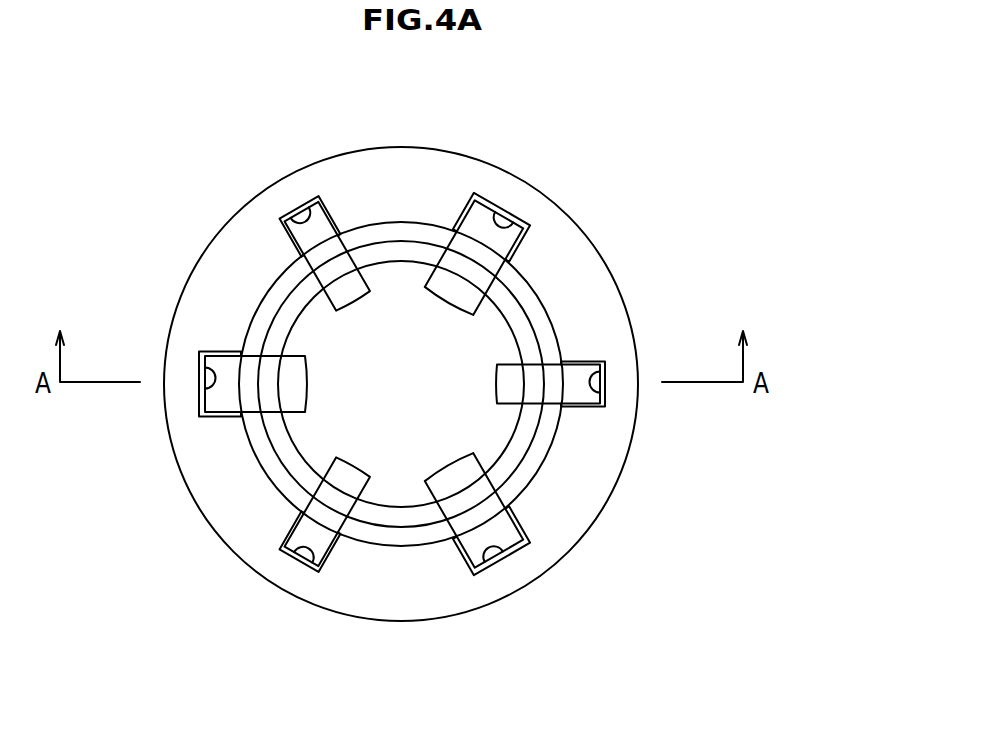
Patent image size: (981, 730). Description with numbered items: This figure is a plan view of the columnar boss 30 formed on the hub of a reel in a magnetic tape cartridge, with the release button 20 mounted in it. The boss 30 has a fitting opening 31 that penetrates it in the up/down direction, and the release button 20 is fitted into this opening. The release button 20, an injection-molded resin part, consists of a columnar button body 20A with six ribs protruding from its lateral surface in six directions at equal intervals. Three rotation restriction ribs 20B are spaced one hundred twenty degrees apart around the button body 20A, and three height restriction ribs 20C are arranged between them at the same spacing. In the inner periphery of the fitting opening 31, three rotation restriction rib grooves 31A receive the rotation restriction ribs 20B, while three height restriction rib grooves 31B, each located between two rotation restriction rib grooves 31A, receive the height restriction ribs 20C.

The release button 20 is at (475, 387).
The button body 20A is at (390, 488).
The rotation restriction rib 20B is at (308, 240).
The height restriction rib 20C is at (467, 215).
The boss 30 is at (377, 173).
The fitting opening 31 is at (253, 327).
The rotation restriction rib groove 31A is at (312, 203).
The height restriction rib groove 31B is at (518, 223).